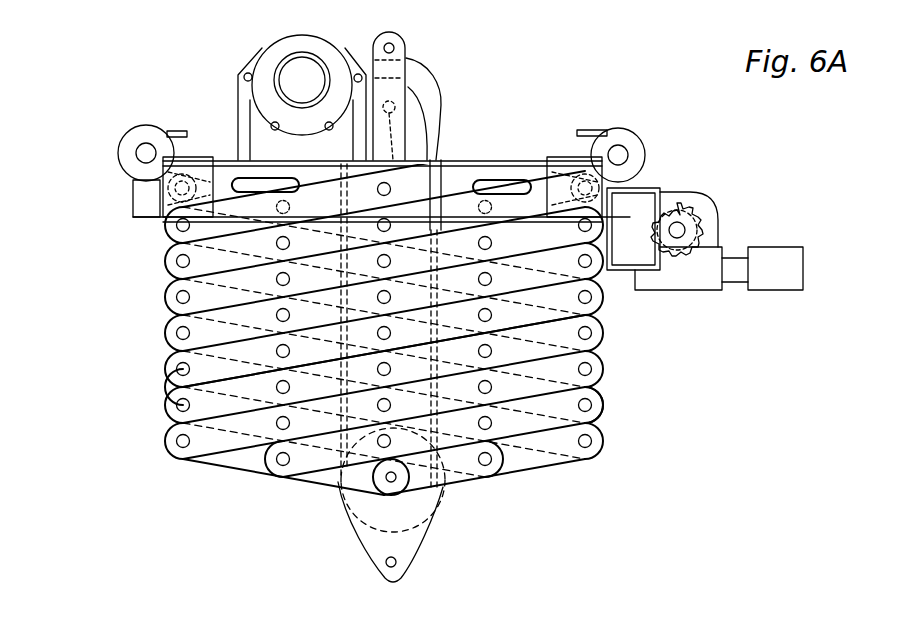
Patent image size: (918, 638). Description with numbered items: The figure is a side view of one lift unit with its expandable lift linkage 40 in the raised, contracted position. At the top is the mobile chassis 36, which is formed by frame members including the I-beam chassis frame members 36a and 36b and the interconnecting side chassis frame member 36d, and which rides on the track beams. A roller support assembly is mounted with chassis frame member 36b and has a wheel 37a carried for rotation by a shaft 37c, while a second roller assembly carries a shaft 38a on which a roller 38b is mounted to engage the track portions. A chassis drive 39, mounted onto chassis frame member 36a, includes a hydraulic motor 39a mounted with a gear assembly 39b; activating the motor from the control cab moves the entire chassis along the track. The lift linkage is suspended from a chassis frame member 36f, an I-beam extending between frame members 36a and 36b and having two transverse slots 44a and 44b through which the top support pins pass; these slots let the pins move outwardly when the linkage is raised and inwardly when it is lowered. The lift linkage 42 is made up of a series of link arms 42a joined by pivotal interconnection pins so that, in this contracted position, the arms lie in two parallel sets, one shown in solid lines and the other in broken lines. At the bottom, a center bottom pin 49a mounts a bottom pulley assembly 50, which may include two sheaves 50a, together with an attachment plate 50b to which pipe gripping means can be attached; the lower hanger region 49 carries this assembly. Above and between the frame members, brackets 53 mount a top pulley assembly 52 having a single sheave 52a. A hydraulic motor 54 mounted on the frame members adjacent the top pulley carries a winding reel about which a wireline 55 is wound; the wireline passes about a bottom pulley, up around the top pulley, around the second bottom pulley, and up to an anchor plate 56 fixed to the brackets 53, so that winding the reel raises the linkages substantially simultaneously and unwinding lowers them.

The mobile chassis 36 is at (133, 203).
The chassis frame member 36a is at (585, 130).
The chassis frame member 36b is at (180, 130).
The chassis frame member 36d is at (207, 158).
The chassis frame member 36f is at (517, 162).
The wheel 37a is at (127, 132).
The shaft 37c is at (141, 152).
The shaft 38a is at (627, 147).
The roller 38b is at (644, 154).
The chassis drive 39 is at (705, 181).
The hydraulic motor 39a is at (777, 262).
The gear assembly 39b is at (702, 290).
The expandable lift linkage 40 is at (158, 300).
The lift linkage 42 is at (165, 383).
The link arm 42a is at (603, 404).
The transverse slot 44a is at (236, 182).
The transverse slot 44b is at (492, 184).
The pendant plate 49 is at (356, 527).
The center bottom pin 49a is at (406, 480).
The bottom pulley assembly 50 is at (372, 546).
The pulley 50a is at (424, 527).
The attachment plate 50b is at (388, 563).
The top pulley assembly 52 is at (422, 45).
The pulley 52a is at (420, 70).
The bracket 53 is at (373, 52).
The hydraulic motor 54 is at (292, 36).
The wireline 55 is at (441, 136).
The anchor plate 56 is at (422, 100).